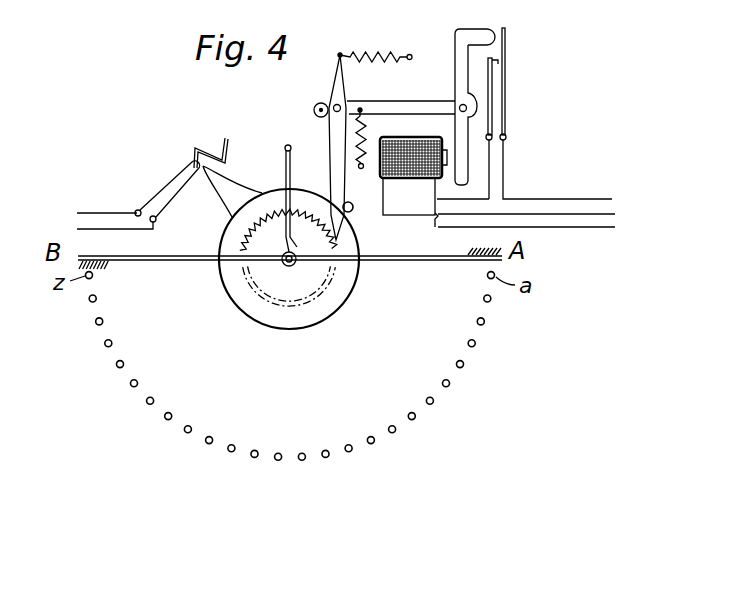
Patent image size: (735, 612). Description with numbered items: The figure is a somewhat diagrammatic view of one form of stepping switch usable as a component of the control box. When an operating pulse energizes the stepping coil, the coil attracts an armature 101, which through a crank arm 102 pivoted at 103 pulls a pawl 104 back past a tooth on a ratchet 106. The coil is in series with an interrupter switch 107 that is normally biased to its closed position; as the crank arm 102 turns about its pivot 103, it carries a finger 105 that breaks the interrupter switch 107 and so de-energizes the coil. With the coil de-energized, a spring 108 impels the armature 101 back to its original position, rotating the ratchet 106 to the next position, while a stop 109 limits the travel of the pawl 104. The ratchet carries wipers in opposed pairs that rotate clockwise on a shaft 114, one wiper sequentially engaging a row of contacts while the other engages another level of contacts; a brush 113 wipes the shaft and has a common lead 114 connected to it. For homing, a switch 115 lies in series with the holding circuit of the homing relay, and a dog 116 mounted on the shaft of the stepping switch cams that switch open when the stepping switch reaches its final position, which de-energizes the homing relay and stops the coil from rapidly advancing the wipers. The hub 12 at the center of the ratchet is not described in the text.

The hub shaft 12 is at (288, 266).
The armature 101 is at (463, 173).
The crank arm 102 is at (420, 95).
The pivot 103 is at (468, 107).
The pawl 104 is at (327, 137).
The finger 105 is at (487, 30).
The ratchet 106 is at (312, 283).
The interrupter switch 107 is at (498, 63).
The spring 108 is at (317, 110).
The stop 109 is at (352, 212).
The brush 113 is at (287, 246).
The shaft 114 is at (284, 148).
The switch 115 is at (190, 167).
The dog 116 is at (220, 188).